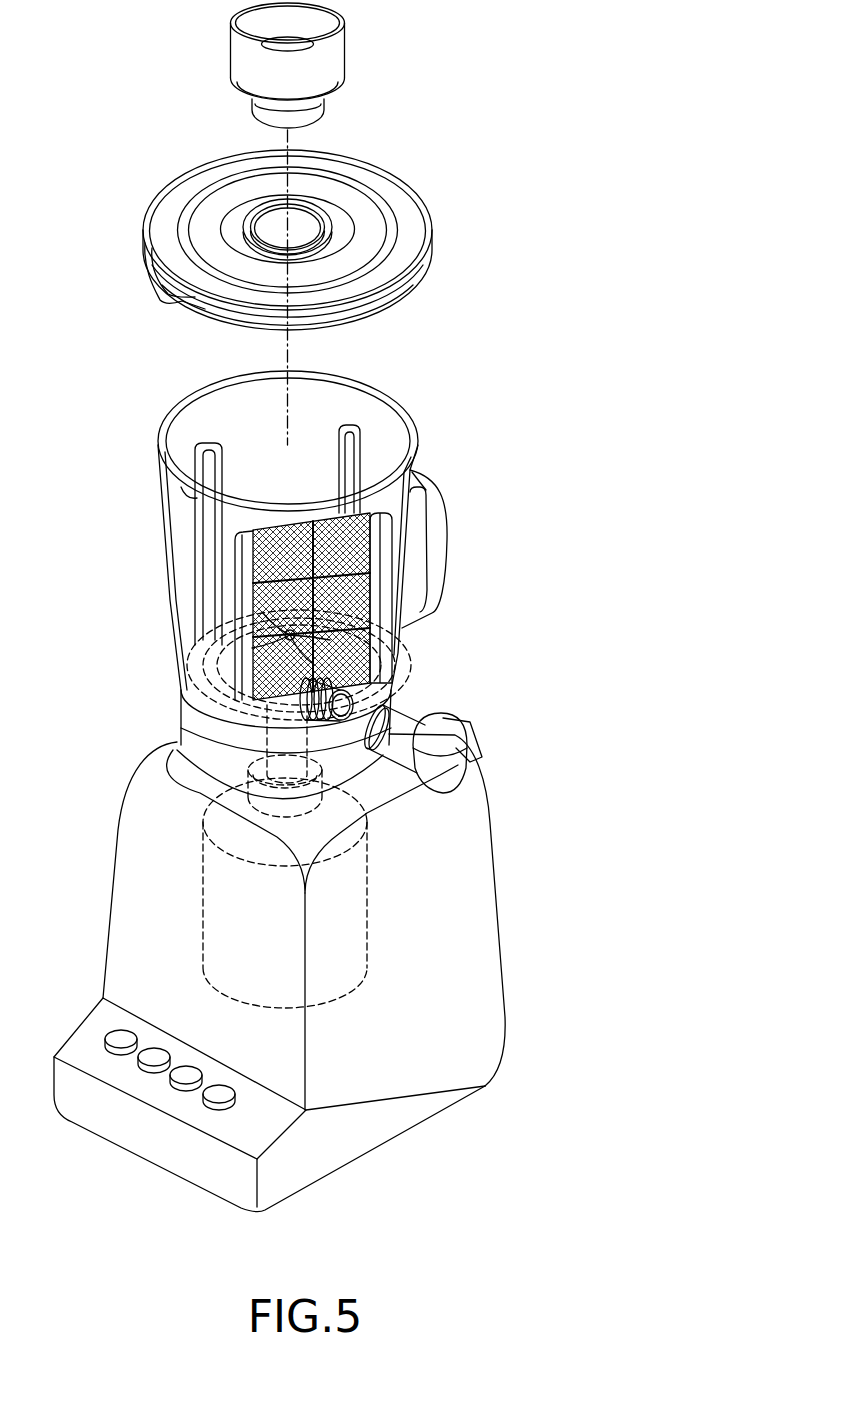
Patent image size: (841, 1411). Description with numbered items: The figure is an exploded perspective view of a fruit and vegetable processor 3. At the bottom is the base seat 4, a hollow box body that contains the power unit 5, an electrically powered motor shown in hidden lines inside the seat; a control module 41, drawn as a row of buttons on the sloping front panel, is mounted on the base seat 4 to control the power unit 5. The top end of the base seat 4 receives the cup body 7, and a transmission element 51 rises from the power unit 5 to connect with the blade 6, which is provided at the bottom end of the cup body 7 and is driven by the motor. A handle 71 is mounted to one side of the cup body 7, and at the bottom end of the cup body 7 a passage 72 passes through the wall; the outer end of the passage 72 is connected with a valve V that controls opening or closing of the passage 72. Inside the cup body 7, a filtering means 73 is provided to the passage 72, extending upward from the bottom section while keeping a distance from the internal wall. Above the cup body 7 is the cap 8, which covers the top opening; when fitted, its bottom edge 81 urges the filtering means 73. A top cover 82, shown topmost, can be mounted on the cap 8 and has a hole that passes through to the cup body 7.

The fruit and vegetable processor 3 is at (104, 36).
The base seat 4 is at (485, 917).
The control module 41 is at (115, 1031).
The power unit 5 is at (213, 907).
The transmission element 51 is at (275, 752).
The blade 6 is at (397, 652).
The cup body 7 is at (149, 480).
The handle 71 is at (442, 537).
The passage 72 is at (357, 700).
The filtering means 73 is at (370, 605).
The cap 8 is at (417, 175).
The bottom edge 81 is at (342, 330).
The top cover 82 is at (335, 60).
The valve V is at (478, 738).